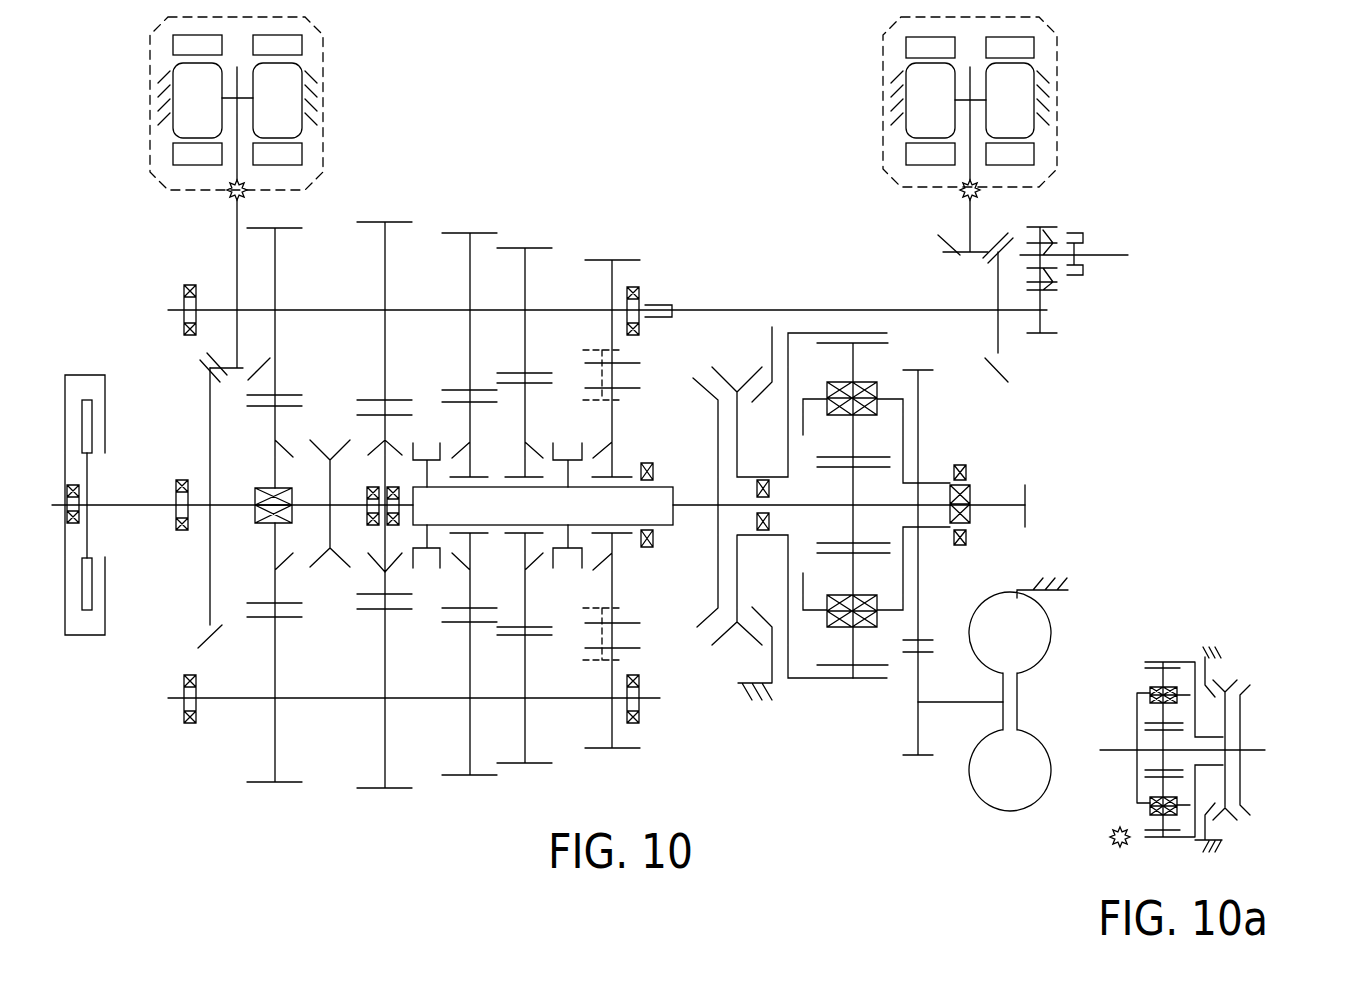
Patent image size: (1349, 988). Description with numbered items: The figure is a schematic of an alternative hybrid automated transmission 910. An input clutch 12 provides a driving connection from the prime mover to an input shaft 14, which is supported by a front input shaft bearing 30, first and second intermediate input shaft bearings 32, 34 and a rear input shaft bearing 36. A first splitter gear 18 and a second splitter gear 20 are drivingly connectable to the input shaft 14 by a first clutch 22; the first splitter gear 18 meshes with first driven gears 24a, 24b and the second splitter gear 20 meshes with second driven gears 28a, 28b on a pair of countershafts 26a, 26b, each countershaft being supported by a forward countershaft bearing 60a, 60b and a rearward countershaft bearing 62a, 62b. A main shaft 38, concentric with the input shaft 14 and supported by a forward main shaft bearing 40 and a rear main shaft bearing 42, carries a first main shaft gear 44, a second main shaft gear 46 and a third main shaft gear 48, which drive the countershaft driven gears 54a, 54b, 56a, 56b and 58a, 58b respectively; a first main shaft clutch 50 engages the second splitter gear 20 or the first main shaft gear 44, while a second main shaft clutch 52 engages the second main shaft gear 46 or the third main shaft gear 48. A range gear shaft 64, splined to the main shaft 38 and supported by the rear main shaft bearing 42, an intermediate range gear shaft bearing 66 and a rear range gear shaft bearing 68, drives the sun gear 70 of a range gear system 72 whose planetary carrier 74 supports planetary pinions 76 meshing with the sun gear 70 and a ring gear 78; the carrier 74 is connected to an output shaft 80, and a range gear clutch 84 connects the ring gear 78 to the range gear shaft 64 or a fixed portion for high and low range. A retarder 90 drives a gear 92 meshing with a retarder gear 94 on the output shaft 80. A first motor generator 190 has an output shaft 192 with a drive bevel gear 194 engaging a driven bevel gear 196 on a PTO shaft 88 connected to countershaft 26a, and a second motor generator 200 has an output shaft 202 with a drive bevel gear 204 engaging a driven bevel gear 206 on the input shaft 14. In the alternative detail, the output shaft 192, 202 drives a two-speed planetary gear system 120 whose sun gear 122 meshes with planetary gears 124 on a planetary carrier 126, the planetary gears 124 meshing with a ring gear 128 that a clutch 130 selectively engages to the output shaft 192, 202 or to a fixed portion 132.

In FIG. 10, the input clutch 12 is at (75, 660).
In FIG. 10, the input shaft 14 is at (155, 502).
In FIG. 10, the first splitter gear 18 is at (275, 578).
In FIG. 10, the second splitter gear 20 is at (385, 580).
In FIG. 10, the first clutch 22 is at (332, 395).
In FIG. 10, the first driven gear 24a is at (275, 262).
In FIG. 10, the first driven gear 24b is at (275, 745).
In FIG. 10, the countershaft 26a is at (400, 305).
In FIG. 10, the countershaft 26b is at (403, 700).
In FIG. 10, the second driven gear 28a is at (385, 265).
In FIG. 10, the second driven gear 28b is at (385, 745).
In FIG. 10, the front input shaft bearing 30 is at (80, 513).
In FIG. 10, the first intermediate input shaft bearing 32 is at (182, 530).
In FIG. 10, the second intermediate input shaft bearing 34 is at (272, 490).
In FIG. 10, the rear input shaft bearing 36 is at (375, 488).
In FIG. 10, the main shaft 38 is at (493, 487).
In FIG. 10, the forward main shaft bearing 40 is at (402, 513).
In FIG. 10, the rear main shaft bearing 42 is at (655, 468).
In FIG. 10, the first main shaft gear 44 is at (472, 582).
In FIG. 10, the second main shaft gear 46 is at (527, 605).
In FIG. 10, the third main shaft gear 48 is at (614, 588).
In FIG. 10, the first main shaft clutch 50 is at (433, 395).
In FIG. 10, the second main shaft clutch 52 is at (569, 400).
In FIG. 10, the third driven gear 54a is at (470, 250).
In FIG. 10, the third driven gear 54b is at (470, 765).
In FIG. 10, the driven gear 56a is at (525, 270).
In FIG. 10, the driven gear 56b is at (525, 740).
In FIG. 10, the driven gear 58a is at (613, 277).
In FIG. 10, the driven gear 58b is at (613, 735).
In FIG. 10, the forward countershaft bearing 60a is at (183, 290).
In FIG. 10, the forward countershaft bearing 60b is at (185, 715).
In FIG. 10, the rearward countershaft bearing 62a is at (640, 330).
In FIG. 10, the rearward countershaft bearing 62b is at (641, 683).
In FIG. 10, the range gear shaft 64 is at (842, 500).
In FIG. 10, the intermediate range gear shaft bearing 66 is at (770, 521).
In FIG. 10, the rear range gear shaft bearing 68 is at (967, 490).
In FIG. 10, the sun gear 70 is at (860, 466).
In FIG. 10, the range gear system 72 is at (833, 718).
In FIG. 10, the planetary carrier 74 is at (893, 408).
In FIG. 10, the planetary pinions 76 is at (877, 345).
In FIG. 10, the ring gear 78 is at (862, 333).
In FIG. 10, the output shaft 80 is at (1000, 508).
In FIG. 10, the range gear clutch 84 is at (728, 668).
In FIG. 10, the PTO shaft 88 is at (763, 308).
In FIG. 10, the retarder 90 is at (999, 840).
In FIG. 10, the gear 92 is at (912, 758).
In FIG. 10, the retarder gear 94 is at (925, 640).
In FIG. 10a, the 2-speed planetary gear system 120 is at (1183, 625).
In FIG. 10a, the sun gear 122 is at (1150, 770).
In FIG. 10a, the planetary gears 124 is at (1160, 676).
In FIG. 10a, the planetary carrier 126 is at (1137, 718).
In FIG. 10a, the ring gear 128 is at (1172, 660).
In FIG. 10a, the clutch 130 is at (1233, 658).
In FIG. 10a, the fixed portion 132 is at (1200, 840).
In FIG. 10, the first motor generator 190 is at (1080, 82).
In FIG. 10, the output shaft 192 is at (963, 224).
In FIG. 10a, the output shaft 192 is at (1243, 750).
In FIG. 10, the drive bevel gear 194 is at (963, 258).
In FIG. 10, the driven bevel gear 196 is at (998, 352).
In FIG. 10, the second motor generator 200 is at (347, 81).
In FIG. 10, the output shaft 202 is at (236, 253).
In FIG. 10a, the output shaft 202 is at (1122, 749).
In FIG. 10, the drive bevel gear 204 is at (213, 363).
In FIG. 10, the driven bevel gear 206 is at (210, 397).
In FIG. 10, the hybrid automated transmission 910 is at (645, 108).